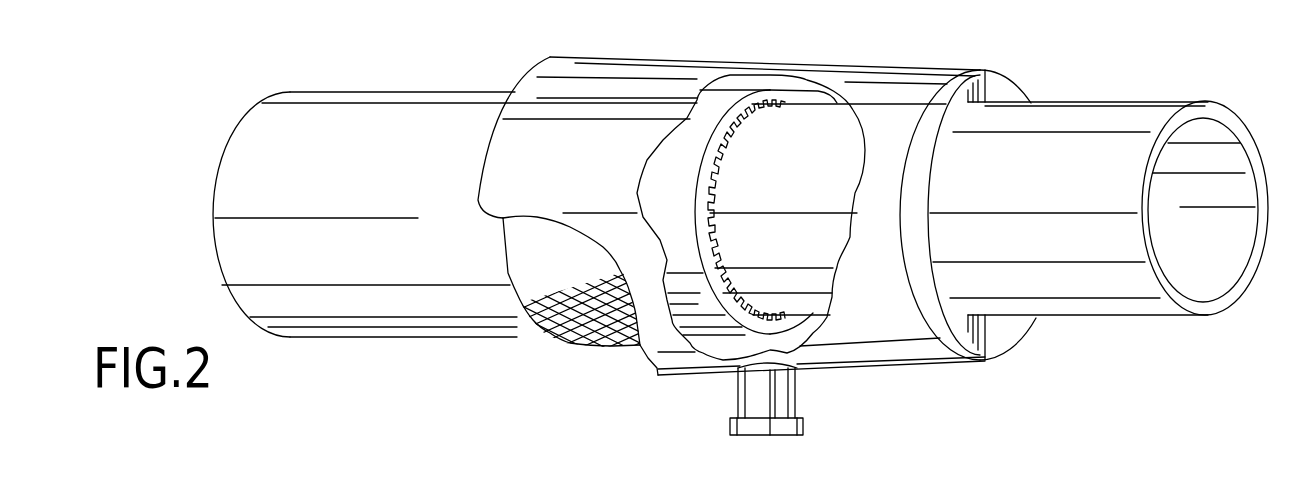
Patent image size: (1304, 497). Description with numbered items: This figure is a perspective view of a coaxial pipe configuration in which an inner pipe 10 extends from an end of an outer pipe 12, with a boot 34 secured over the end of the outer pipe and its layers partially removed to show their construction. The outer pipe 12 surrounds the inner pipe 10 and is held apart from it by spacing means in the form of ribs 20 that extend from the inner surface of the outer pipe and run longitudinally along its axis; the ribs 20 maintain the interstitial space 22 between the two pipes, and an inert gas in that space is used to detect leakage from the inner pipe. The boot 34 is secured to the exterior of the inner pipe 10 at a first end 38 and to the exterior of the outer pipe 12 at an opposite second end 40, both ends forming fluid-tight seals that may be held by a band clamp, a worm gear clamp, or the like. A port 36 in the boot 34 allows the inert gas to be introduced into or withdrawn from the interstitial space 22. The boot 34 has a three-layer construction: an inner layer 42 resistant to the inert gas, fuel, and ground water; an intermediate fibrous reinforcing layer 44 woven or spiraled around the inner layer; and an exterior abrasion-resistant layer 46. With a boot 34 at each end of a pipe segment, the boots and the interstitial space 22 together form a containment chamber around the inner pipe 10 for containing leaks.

The inner pipe 10 is at (1115, 303).
The outer pipe 12 is at (384, 112).
The ribs 20 is at (735, 294).
The interstitial space 22 is at (710, 227).
The boot 34 is at (897, 350).
The port 36 is at (777, 405).
The first end of the boot 38 is at (997, 347).
The second end of the boot 40 is at (528, 85).
The inner layer 42 is at (532, 293).
The intermediate fibrous reinforcing layer 44 is at (585, 333).
The exterior abrasion-resistant layer 46 is at (655, 362).